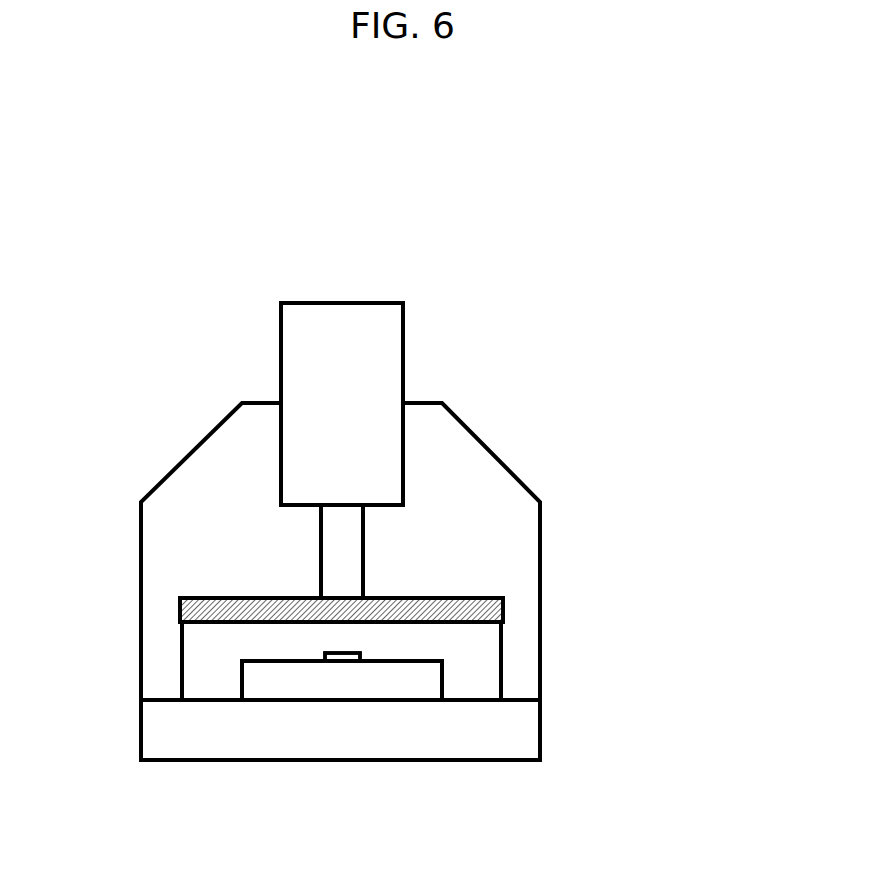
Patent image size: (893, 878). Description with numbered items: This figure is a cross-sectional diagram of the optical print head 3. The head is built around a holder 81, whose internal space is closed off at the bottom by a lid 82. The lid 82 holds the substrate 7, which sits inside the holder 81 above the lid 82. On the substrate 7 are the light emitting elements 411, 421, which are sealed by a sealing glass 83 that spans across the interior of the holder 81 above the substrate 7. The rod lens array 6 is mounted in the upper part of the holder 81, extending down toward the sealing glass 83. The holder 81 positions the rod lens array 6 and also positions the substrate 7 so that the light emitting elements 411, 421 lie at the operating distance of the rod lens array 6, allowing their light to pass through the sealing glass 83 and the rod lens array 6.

The optical print head 3 is at (400, 216).
The rod lens array 6 is at (393, 339).
The substrate 7 is at (445, 681).
The holder 81 is at (198, 472).
The lid 82 is at (463, 745).
The sealing glass 83 is at (190, 603).
The light emitting element 411 is at (343, 652).
The light emitting element 421 is at (342, 657).